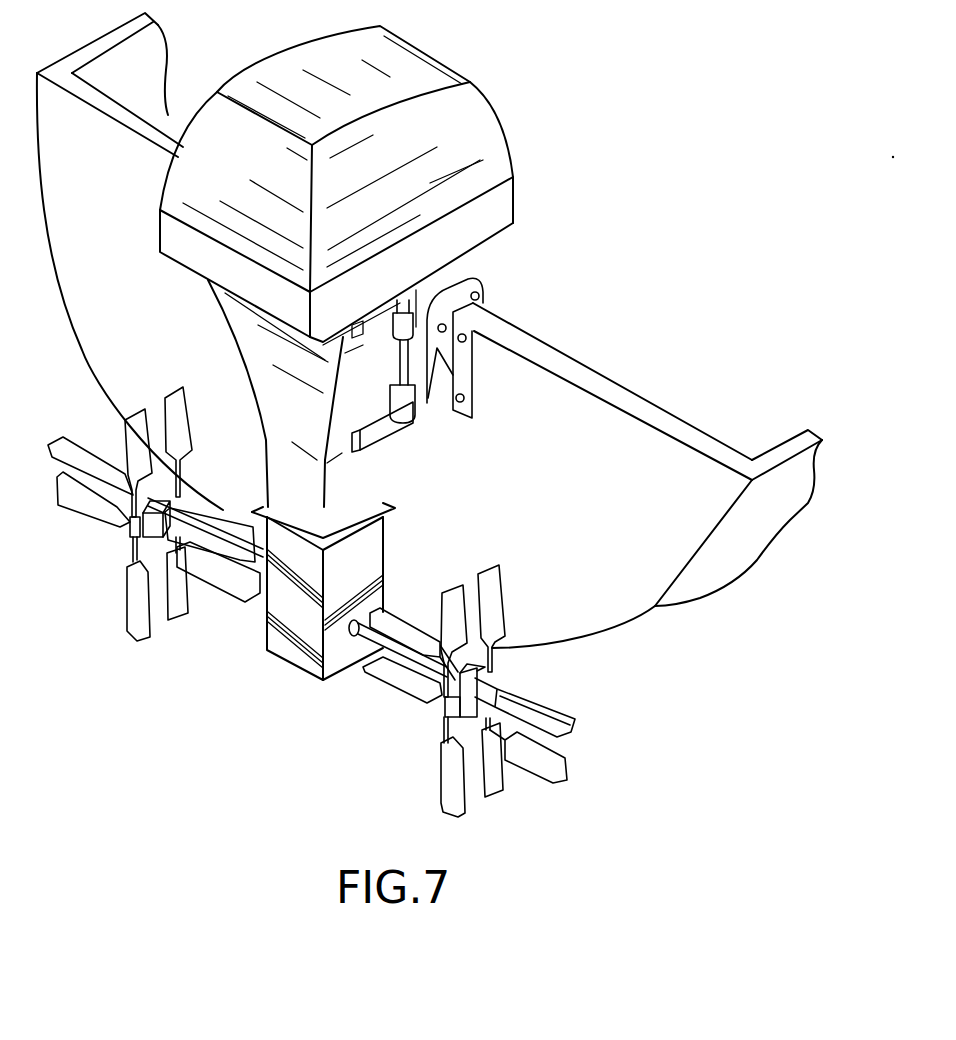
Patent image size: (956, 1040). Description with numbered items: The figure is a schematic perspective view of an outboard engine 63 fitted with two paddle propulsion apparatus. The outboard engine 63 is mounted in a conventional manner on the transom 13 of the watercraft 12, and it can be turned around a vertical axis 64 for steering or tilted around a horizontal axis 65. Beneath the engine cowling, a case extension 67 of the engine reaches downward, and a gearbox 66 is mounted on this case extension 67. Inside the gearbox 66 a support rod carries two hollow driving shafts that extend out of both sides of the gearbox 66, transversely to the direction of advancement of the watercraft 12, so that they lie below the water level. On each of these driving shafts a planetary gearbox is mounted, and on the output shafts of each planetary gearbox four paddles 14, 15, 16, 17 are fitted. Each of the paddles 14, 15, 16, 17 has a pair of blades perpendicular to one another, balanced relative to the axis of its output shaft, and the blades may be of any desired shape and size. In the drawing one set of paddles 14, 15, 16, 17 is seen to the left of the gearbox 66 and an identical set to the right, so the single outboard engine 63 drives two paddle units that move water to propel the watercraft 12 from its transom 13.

The watercraft 12 is at (752, 518).
The transom 13 is at (646, 587).
The paddle 14 is at (445, 773).
The paddle 15 is at (498, 612).
The paddle 16 is at (413, 688).
The paddle 17 is at (543, 703).
The outboard engine 63 is at (500, 213).
The vertical axis 64 is at (405, 367).
The horizontal axis 65 is at (483, 342).
The gearbox 66 is at (298, 650).
The case extension 67 is at (285, 394).